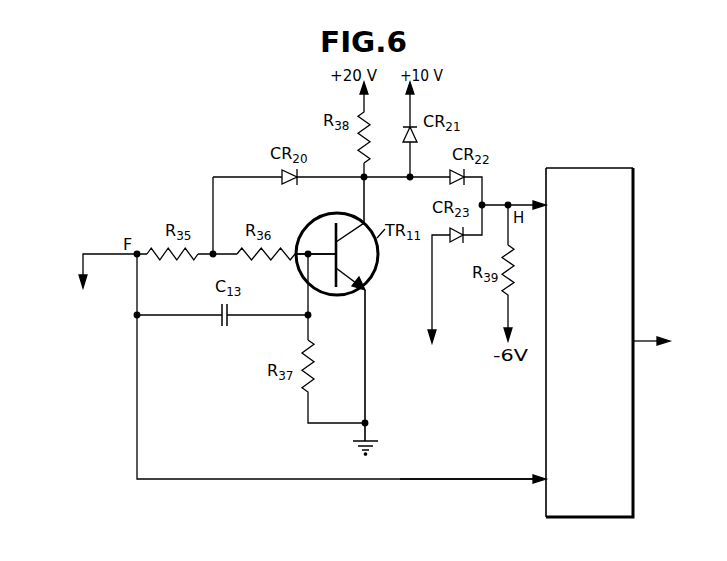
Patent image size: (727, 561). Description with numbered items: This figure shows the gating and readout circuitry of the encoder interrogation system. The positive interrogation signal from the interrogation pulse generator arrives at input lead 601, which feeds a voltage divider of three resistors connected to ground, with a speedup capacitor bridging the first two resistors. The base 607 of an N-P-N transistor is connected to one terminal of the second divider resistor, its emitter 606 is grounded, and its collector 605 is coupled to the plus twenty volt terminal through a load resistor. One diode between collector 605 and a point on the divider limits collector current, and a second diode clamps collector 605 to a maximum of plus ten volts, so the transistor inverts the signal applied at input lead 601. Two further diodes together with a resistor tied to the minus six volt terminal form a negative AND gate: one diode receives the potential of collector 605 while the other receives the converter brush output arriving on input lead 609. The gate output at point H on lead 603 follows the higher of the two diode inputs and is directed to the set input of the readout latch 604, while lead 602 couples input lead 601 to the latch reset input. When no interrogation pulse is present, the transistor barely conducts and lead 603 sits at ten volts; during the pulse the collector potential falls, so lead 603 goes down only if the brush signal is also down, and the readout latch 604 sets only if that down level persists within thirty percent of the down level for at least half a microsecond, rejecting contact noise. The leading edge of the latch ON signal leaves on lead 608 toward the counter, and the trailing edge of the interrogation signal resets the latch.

The input lead 601 is at (82, 265).
The lead 602 is at (493, 481).
The output lead of the AND gate 603 is at (520, 193).
The readout latch 604 is at (598, 167).
The collector 605 is at (351, 232).
The emitter 606 is at (346, 277).
The base 607 is at (323, 252).
The lead 608 is at (638, 340).
The input lead 609 is at (432, 289).